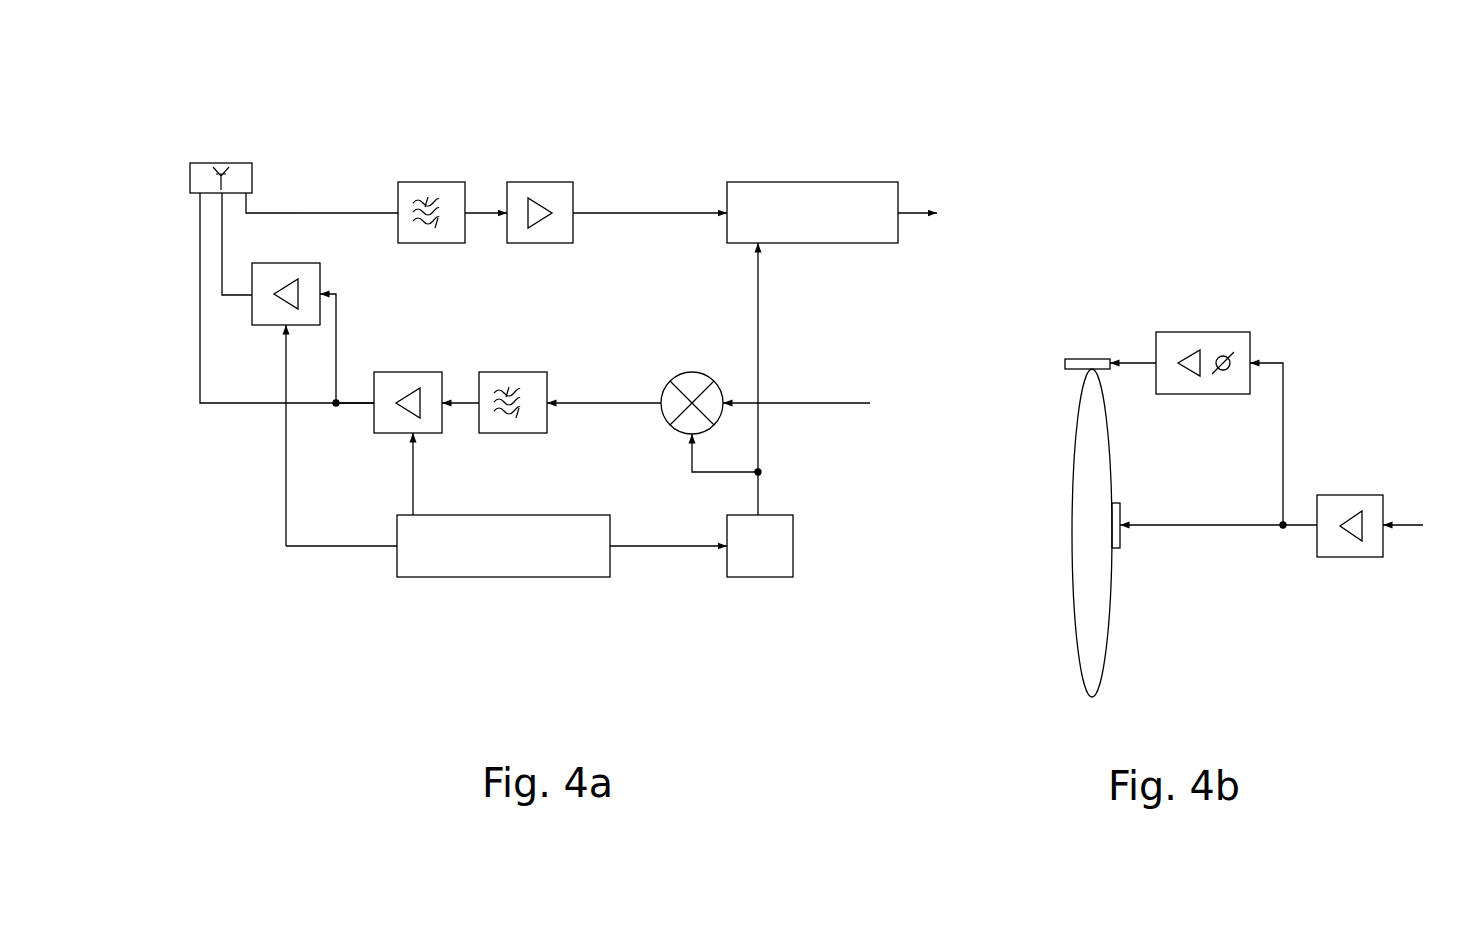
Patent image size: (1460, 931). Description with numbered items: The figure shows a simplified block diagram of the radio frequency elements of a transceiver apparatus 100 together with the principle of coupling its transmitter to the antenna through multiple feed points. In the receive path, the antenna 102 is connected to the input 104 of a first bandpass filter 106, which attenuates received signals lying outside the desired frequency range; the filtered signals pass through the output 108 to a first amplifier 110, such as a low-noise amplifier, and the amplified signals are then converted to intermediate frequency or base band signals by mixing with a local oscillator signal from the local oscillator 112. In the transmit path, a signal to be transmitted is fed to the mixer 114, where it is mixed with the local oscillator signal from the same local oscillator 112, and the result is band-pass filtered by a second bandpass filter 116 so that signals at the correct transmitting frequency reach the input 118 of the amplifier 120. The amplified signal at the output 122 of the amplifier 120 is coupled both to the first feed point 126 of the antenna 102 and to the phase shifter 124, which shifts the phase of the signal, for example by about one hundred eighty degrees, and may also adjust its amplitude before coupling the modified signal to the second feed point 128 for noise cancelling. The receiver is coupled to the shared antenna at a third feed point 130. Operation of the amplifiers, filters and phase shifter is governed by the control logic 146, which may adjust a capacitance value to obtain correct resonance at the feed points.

In FIG. 4A, the apparatus 100 is at (891, 98).
In FIG. 4A, the antenna 102 is at (200, 163).
In FIG. 4B, the antenna 102 is at (1110, 621).
In FIG. 4A, the input of first bandpass filter 104 is at (388, 212).
In FIG. 4A, the first bandpass filter 106 is at (430, 182).
In FIG. 4A, the output of first bandpass filter 108 is at (470, 212).
In FIG. 4A, the first amplifier 110 is at (537, 182).
In FIG. 4A, the local oscillator 112 is at (757, 182).
In FIG. 4A, the mixer 114 is at (675, 380).
In FIG. 4A, the second bandpass filter 116 is at (506, 372).
In FIG. 4A, the input of amplifier 118 is at (443, 402).
In FIG. 4B, the input of amplifier 118 is at (1417, 524).
In FIG. 4A, the amplifier 120 is at (397, 372).
In FIG. 4B, the amplifier 120 is at (1336, 495).
In FIG. 4A, the output of amplifier 122 is at (362, 402).
In FIG. 4B, the output of amplifier 122 is at (1302, 526).
In FIG. 4A, the phase shifter 124 is at (320, 271).
In FIG. 4B, the phase shifter 124 is at (1178, 332).
In FIG. 4A, the first feed point 126 is at (200, 213).
In FIG. 4B, the first feed point 126 is at (1120, 505).
In FIG. 4A, the second feed point 128 is at (222, 233).
In FIG. 4B, the second feed point 128 is at (1080, 359).
In FIG. 4A, the third feed point 130 is at (250, 204).
In FIG. 4A, the control logic 146 is at (528, 577).